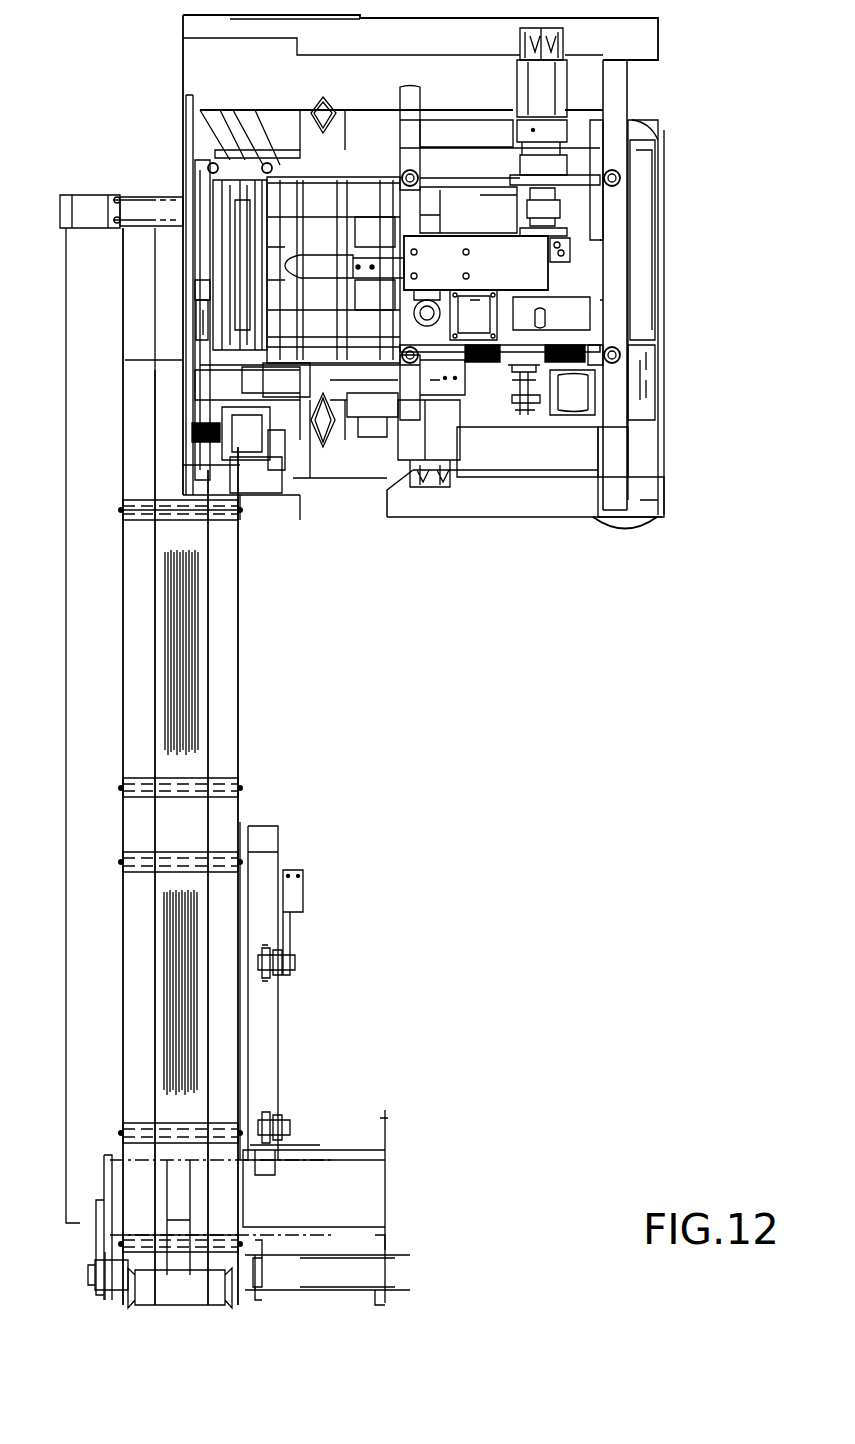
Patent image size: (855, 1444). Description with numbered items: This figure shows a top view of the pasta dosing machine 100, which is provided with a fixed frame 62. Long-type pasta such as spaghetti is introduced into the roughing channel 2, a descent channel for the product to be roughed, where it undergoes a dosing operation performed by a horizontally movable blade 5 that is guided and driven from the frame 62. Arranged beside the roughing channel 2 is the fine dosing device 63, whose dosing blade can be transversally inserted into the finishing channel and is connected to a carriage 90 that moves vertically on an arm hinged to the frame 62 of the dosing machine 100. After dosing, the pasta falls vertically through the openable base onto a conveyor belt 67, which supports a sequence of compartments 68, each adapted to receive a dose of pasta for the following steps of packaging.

The dosing machine 100 is at (460, 542).
The fixed frame 62 is at (220, 80).
The roughing channel 2 is at (250, 207).
The blade 5 is at (327, 267).
The carriage 90 is at (200, 287).
The fine dosing device 63 is at (215, 318).
The conveyor belt 67 is at (240, 724).
The compartments 68 is at (203, 662).